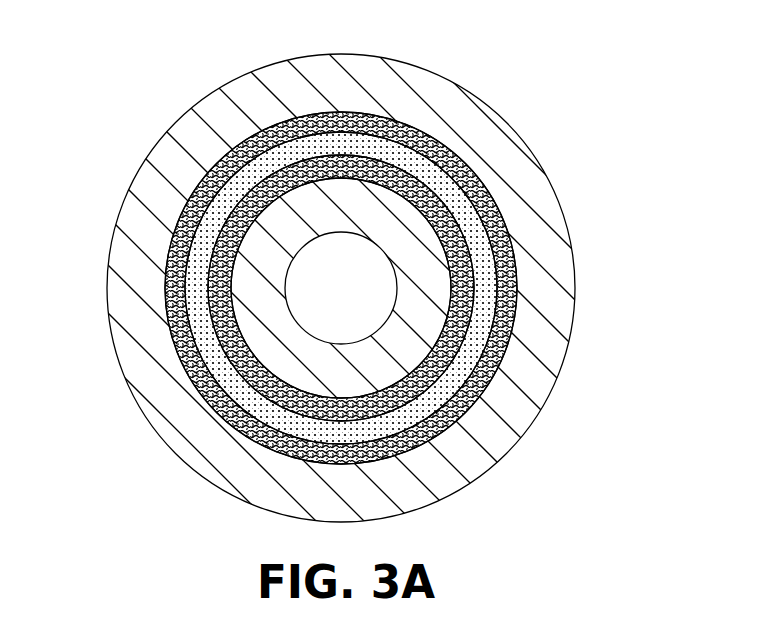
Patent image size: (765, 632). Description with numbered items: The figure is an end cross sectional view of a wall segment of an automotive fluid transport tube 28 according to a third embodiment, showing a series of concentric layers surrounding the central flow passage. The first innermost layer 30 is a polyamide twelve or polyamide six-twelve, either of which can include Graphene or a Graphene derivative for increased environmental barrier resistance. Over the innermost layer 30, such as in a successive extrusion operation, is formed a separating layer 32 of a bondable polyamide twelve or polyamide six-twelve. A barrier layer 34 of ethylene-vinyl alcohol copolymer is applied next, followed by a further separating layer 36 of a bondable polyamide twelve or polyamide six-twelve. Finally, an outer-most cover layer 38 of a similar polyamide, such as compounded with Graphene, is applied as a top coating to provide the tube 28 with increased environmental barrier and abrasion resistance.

The automotive fluid transport tube 28 is at (152, 82).
The first innermost layer 30 is at (256, 355).
The separating layer 32 is at (210, 324).
The barrier layer 34 is at (189, 310).
The further separating layer 36 is at (164, 263).
The outer-most cover layer 38 is at (114, 208).